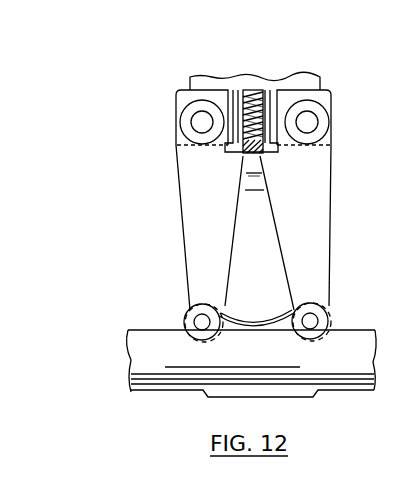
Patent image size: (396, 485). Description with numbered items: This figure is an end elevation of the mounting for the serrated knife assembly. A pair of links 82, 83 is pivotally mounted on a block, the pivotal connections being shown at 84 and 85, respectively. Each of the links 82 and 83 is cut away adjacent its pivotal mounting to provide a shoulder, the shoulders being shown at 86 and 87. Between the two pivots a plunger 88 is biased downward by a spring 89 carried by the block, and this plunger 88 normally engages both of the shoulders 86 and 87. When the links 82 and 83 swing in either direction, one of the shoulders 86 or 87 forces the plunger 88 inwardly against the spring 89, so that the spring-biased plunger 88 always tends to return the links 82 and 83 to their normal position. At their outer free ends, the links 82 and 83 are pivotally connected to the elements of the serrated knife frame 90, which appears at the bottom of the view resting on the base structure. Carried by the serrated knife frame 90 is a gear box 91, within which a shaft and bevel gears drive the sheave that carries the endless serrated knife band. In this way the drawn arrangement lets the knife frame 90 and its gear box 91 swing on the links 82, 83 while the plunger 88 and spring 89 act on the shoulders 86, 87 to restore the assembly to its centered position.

The link 82 is at (184, 226).
The link 83 is at (322, 223).
The pivotal connection 84 is at (200, 122).
The pivotal connection 85 is at (310, 124).
The shoulder 86 is at (233, 153).
The shoulder 87 is at (271, 152).
The plunger 88 is at (264, 162).
The spring 89 is at (255, 95).
The serrated knife frame 90 is at (200, 307).
The gear box 91 is at (241, 293).